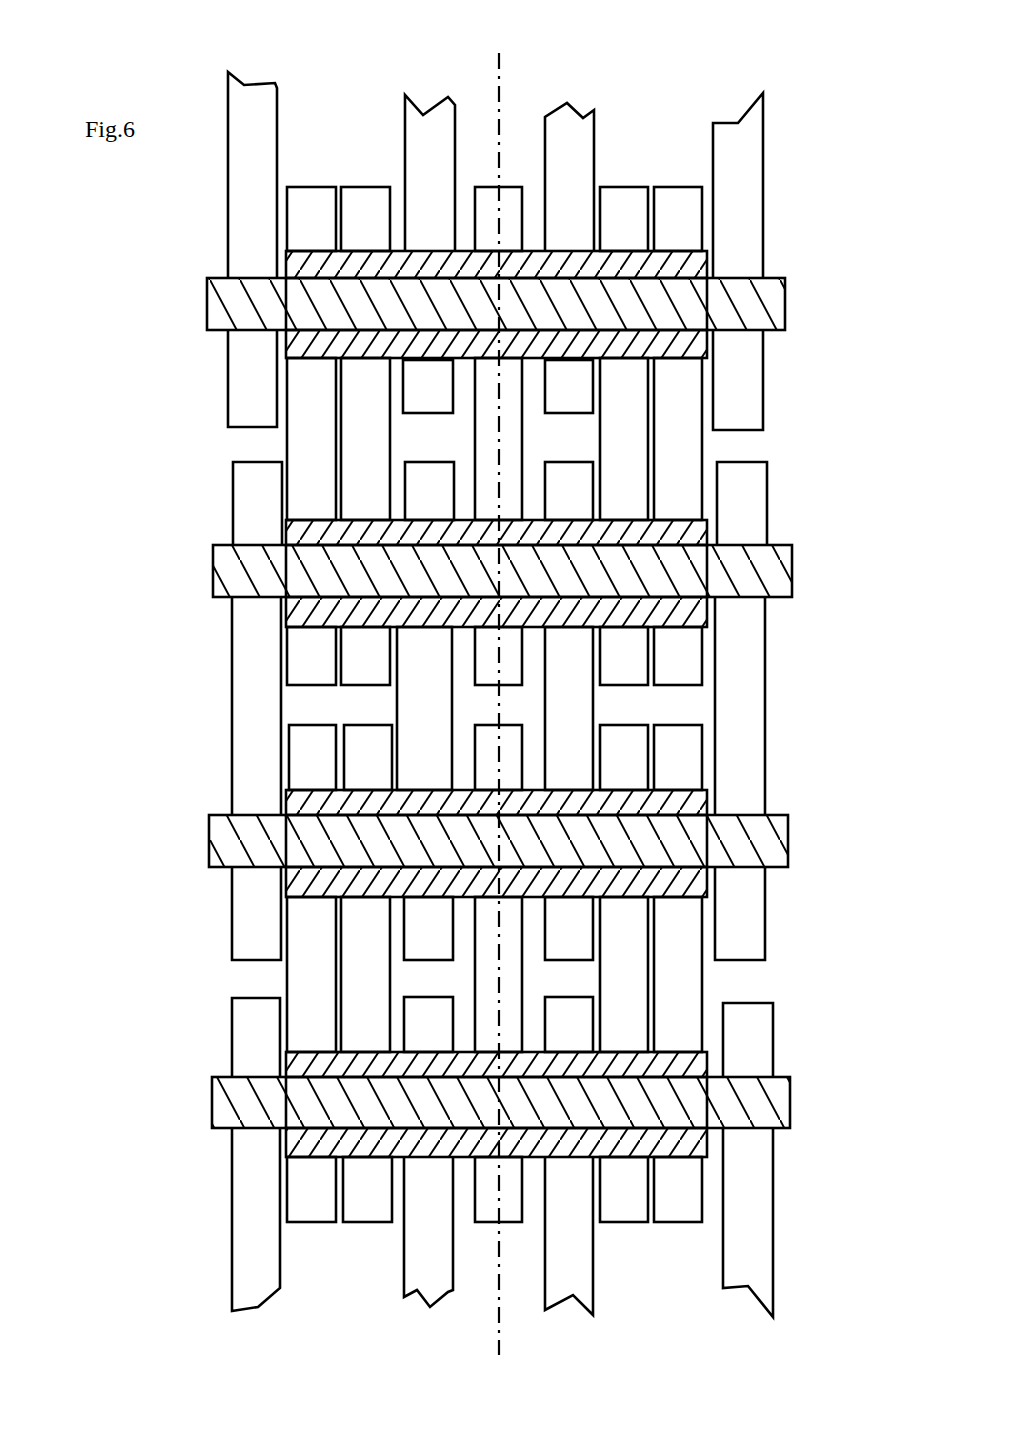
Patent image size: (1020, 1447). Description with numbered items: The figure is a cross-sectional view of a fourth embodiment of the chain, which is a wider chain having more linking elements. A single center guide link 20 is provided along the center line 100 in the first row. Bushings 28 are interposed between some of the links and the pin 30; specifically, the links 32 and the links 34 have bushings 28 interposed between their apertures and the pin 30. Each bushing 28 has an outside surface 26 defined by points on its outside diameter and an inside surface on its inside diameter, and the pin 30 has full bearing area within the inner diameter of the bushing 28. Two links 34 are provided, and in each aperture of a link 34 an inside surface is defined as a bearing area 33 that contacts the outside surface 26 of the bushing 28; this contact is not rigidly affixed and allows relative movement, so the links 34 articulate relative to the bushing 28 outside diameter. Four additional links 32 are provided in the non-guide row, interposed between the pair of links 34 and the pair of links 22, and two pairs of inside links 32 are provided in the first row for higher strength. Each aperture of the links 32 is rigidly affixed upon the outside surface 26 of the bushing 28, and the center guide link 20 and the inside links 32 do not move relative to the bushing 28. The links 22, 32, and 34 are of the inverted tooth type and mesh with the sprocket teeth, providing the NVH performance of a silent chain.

The center line 100 is at (499, 70).
The center guide link 20 is at (483, 233).
The links 22 is at (237, 400).
The outside surface 26 is at (532, 518).
The bushing 28 is at (473, 360).
The pin 30 is at (762, 300).
The inside links 32 is at (296, 233).
The bearing area 33 is at (400, 360).
The links 34 is at (413, 400).